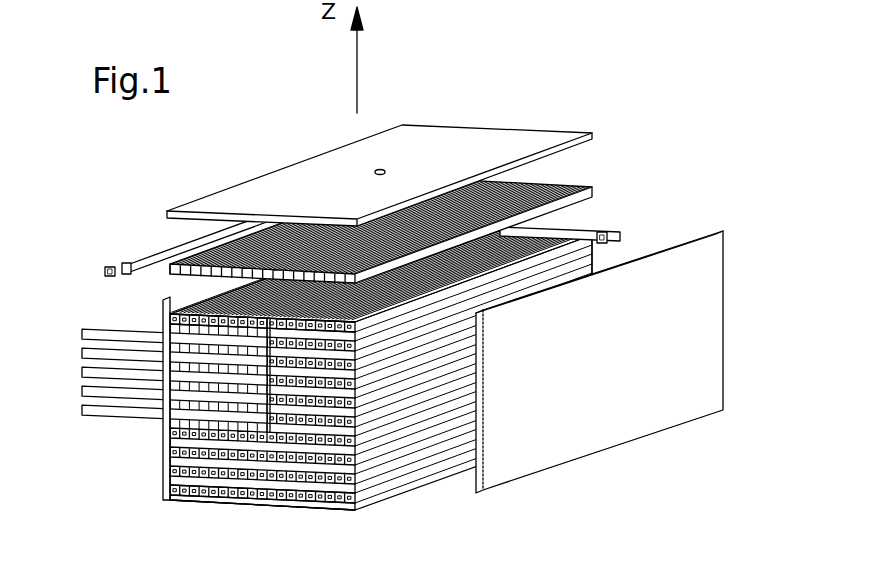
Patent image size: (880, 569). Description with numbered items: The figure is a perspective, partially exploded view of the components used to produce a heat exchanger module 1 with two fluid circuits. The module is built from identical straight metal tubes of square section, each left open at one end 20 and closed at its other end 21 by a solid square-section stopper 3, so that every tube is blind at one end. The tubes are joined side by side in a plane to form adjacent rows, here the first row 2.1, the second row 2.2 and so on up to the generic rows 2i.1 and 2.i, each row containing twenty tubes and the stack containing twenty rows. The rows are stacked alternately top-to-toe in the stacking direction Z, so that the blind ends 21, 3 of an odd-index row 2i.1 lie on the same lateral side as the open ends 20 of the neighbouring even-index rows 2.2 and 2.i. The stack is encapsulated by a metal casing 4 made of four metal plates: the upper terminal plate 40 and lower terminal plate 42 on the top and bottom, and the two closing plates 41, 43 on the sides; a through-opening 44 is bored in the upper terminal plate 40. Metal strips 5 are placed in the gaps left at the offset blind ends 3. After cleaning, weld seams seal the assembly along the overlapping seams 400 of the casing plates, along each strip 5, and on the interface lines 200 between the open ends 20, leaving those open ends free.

The heat exchanger module 1 is at (632, 145).
The first adjacent row of tubes 2.1 is at (597, 173).
The second adjacent row of tubes 2.2 is at (390, 390).
The even-index adjacent row of tubes 2.i is at (168, 447).
The odd-index adjacent row of tubes 2i.1 is at (372, 452).
The solid stopper 3 is at (603, 243).
The metal casing 4 is at (473, 97).
The metal strip 5 is at (82, 409).
The open end of tube 20 is at (230, 318).
The closed end of tube 21 is at (538, 562).
The interface line 200 is at (287, 503).
The upper terminal plate 40 is at (379, 148).
The closing plate 41 is at (708, 385).
The lower terminal plate 42 is at (247, 507).
The closing plate 43 is at (163, 295).
The through-opening 44 is at (342, 172).
The overlapping seam 400 is at (173, 503).